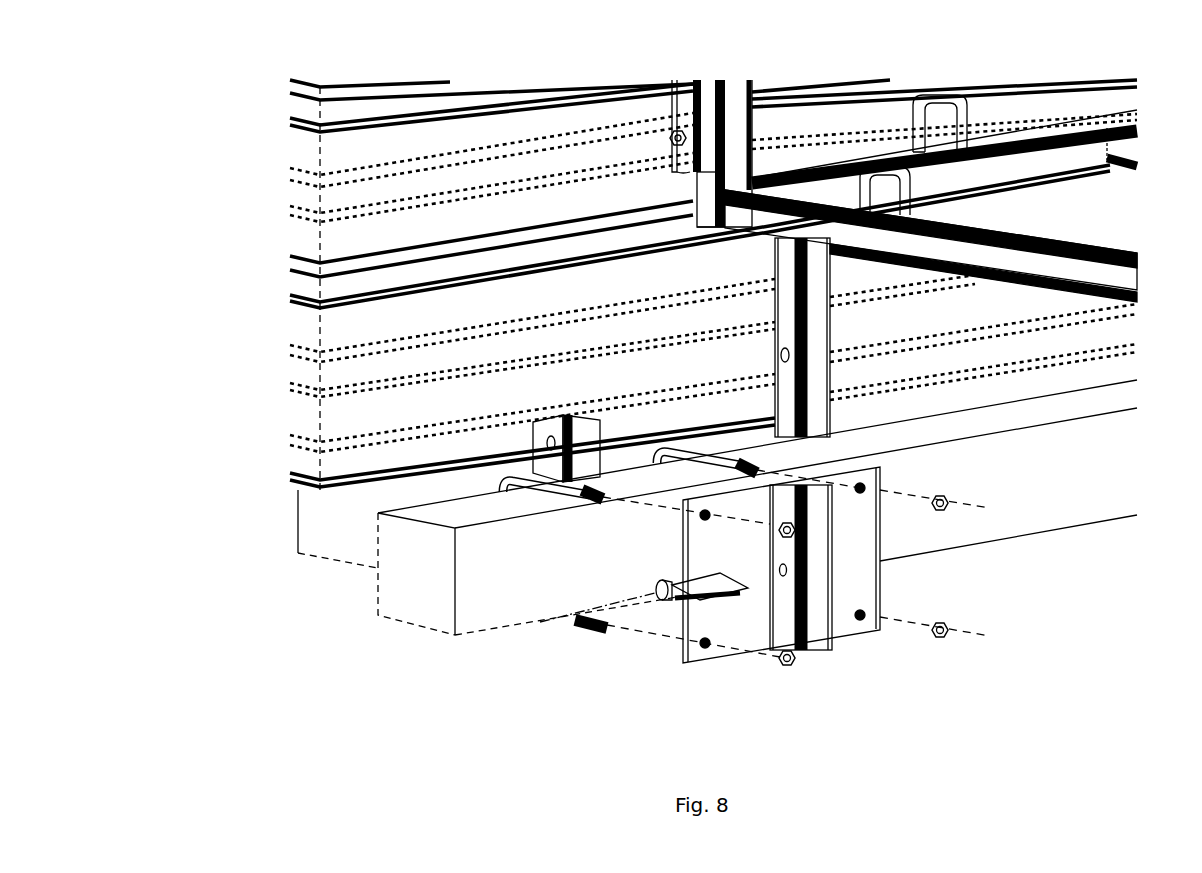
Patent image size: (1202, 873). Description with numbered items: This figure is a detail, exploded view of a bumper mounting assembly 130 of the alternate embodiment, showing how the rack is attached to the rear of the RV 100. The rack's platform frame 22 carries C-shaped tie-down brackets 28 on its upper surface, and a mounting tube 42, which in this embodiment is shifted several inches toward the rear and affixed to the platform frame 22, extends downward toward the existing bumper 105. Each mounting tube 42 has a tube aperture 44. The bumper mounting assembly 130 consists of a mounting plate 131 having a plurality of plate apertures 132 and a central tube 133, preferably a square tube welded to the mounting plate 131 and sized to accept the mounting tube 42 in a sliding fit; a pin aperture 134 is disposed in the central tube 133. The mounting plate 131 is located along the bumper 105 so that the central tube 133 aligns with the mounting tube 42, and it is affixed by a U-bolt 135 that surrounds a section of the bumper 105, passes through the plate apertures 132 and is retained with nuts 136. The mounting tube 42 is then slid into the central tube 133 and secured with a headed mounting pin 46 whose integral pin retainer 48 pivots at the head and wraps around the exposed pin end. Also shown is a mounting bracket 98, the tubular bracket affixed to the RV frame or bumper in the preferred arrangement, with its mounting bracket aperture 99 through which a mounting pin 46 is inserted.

The platform frame 22 is at (1105, 252).
The tie-down bracket 28 is at (962, 110).
The mounting tube 42 is at (780, 292).
The tube aperture 44 is at (778, 355).
The mounting pin 46 is at (655, 597).
The pin retainer 48 is at (693, 600).
The mounting bracket 98 is at (540, 430).
The mounting bracket aperture 99 is at (547, 443).
The RV 100 is at (372, 210).
The bumper 105 is at (400, 602).
The bumper mounting assembly 130 is at (630, 696).
The mounting plate 131 is at (840, 625).
The plate aperture 132 is at (878, 620).
The central tube 133 is at (817, 635).
The pin aperture 134 is at (783, 575).
The U-bolt 135 is at (573, 621).
The nut 136 is at (952, 502).